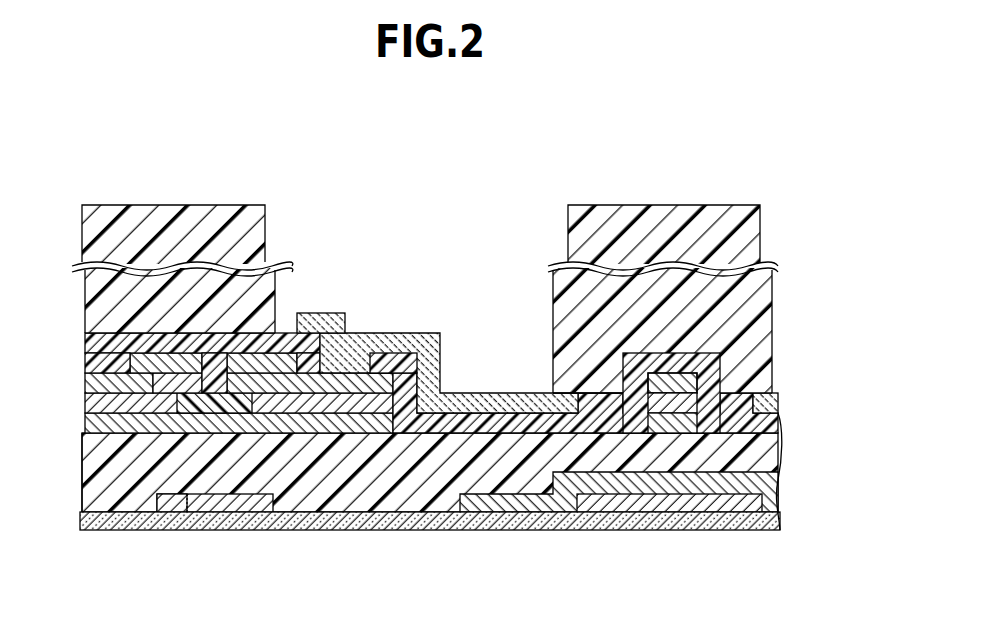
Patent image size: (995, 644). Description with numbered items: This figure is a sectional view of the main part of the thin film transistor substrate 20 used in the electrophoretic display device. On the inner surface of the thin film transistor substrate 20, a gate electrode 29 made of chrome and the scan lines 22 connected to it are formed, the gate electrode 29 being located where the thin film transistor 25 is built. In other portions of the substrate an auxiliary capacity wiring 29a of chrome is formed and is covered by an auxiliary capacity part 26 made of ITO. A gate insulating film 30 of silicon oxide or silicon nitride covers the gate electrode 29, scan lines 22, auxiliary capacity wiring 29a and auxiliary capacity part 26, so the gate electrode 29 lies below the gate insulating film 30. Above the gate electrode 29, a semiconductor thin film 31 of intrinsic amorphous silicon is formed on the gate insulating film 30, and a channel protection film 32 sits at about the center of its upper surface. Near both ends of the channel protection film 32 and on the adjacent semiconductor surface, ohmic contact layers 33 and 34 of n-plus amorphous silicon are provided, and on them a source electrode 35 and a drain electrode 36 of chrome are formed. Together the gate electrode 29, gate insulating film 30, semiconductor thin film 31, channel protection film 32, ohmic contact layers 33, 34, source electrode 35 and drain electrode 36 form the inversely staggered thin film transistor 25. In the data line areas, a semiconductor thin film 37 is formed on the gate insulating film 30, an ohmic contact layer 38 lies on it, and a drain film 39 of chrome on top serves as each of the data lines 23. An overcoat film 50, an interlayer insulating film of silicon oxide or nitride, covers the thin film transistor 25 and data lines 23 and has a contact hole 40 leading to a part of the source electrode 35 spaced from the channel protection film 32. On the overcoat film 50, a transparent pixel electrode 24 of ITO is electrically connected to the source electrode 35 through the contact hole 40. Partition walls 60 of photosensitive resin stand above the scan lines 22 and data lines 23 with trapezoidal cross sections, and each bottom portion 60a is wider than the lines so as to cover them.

The thin film transistor substrate 20 is at (412, 531).
The scan lines 22 is at (170, 503).
The data lines 23 is at (607, 309).
The transparent pixel electrode 24 is at (415, 343).
The thin film transistor 25 is at (162, 438).
The auxiliary capacity part 26 is at (510, 500).
The gate electrode 29 is at (245, 505).
The auxiliary capacity wiring 29a is at (705, 503).
The gate insulating film 30 is at (760, 447).
The semiconductor thin film 31 is at (100, 425).
The channel protection film 32 is at (215, 403).
The ohmic contact layer 33 is at (313, 333).
The ohmic contact layer 34 is at (122, 402).
The source electrode 35 is at (240, 363).
The drain electrode 36 is at (165, 357).
The semiconductor thin film 37 is at (697, 403).
The ohmic contact layer 38 is at (720, 383).
The drain film 39 is at (670, 382).
The contact hole 40 is at (362, 360).
The overcoat film 50 is at (100, 352).
The partition wall 60 is at (162, 213).
The bottom portion 60a is at (122, 322).